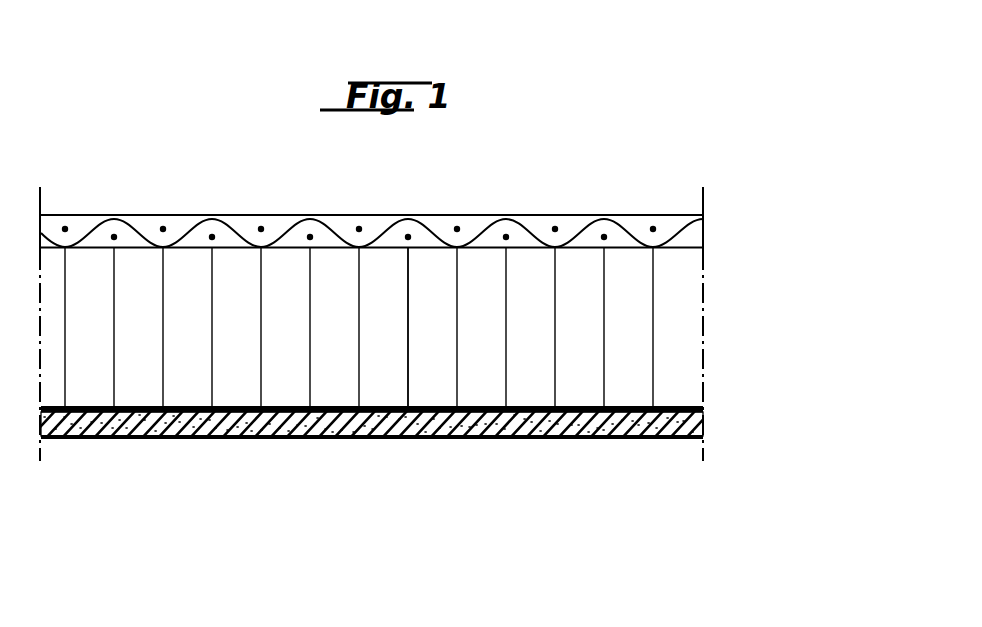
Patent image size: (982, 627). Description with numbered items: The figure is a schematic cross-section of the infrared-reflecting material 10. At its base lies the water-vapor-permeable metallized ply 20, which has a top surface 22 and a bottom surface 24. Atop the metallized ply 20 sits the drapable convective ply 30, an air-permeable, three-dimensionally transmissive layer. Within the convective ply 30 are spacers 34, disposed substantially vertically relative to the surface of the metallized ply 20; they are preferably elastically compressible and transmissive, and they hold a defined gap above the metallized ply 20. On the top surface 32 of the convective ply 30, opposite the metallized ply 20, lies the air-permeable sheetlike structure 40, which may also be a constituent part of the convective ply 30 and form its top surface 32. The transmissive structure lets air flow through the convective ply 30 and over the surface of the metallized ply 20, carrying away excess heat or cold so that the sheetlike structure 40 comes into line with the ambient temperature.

The infrared-reflecting material 10 is at (582, 187).
The water-vapor-permeable metallized ply 20 is at (695, 423).
The top surface 22 is at (678, 407).
The bottom surface 24 is at (668, 440).
The drapable convective ply 30 is at (690, 319).
The top surface of the convective ply 32 is at (623, 245).
The spacers 34 is at (408, 377).
The air-permeable sheetlike structure 40 is at (695, 235).